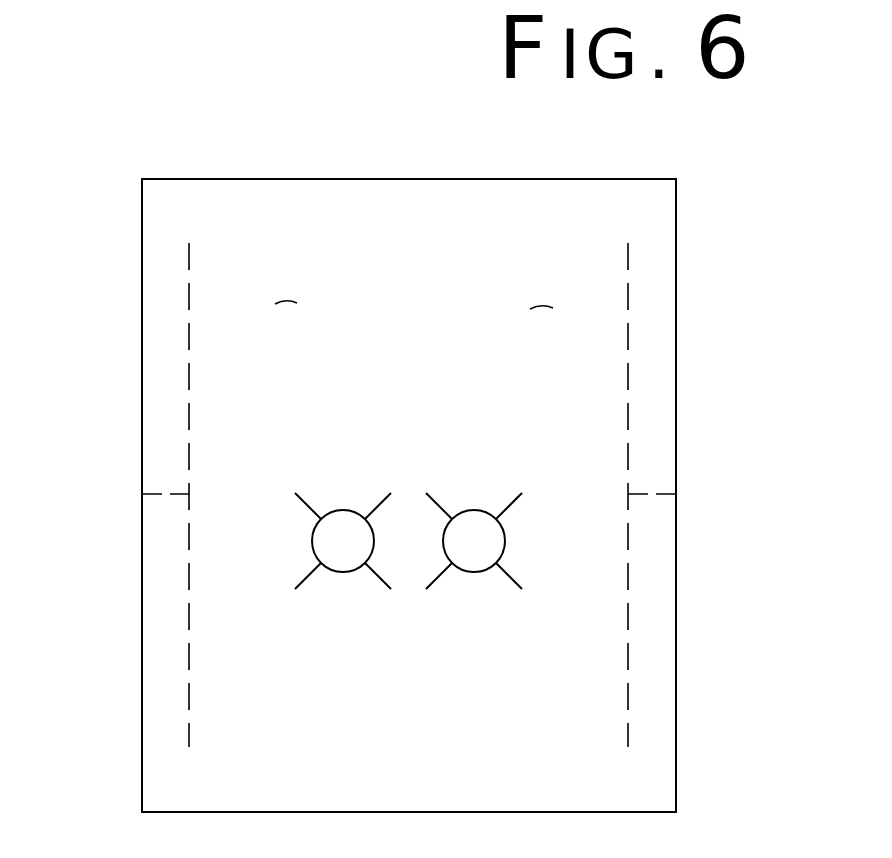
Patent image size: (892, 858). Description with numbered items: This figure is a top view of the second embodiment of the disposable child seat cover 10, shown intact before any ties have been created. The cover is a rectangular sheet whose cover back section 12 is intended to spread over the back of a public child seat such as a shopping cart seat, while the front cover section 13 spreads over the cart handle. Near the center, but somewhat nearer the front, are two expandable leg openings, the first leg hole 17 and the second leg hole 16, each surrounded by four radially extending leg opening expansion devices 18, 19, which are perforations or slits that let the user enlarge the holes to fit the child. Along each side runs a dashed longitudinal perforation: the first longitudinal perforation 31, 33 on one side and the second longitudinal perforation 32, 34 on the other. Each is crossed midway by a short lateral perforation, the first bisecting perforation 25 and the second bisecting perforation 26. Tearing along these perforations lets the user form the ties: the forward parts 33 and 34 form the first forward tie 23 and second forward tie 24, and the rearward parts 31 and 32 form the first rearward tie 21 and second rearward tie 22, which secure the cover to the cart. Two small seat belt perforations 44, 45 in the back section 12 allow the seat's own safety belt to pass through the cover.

The disposable child seat cover 10 is at (317, 127).
The cover back section 12 is at (280, 262).
The front cover section 13 is at (510, 763).
The second leg hole 16 is at (343, 548).
The first leg hole 17 is at (308, 505).
The leg opening expansion device 18 is at (474, 534).
The leg opening expansion device 19 is at (510, 507).
The first rearward tie 21 is at (657, 417).
The second rearward tie 22 is at (170, 437).
The first forward tie 23 is at (650, 640).
The second forward tie 24 is at (163, 612).
The first bisecting perforation 25 is at (655, 495).
The second bisecting perforation 26 is at (157, 494).
The first longitudinal perforation (rearward part) 31 is at (629, 338).
The second longitudinal perforation (rearward part) 32 is at (188, 340).
The first longitudinal perforation (forward part) 33 is at (629, 700).
The second longitudinal perforation (forward part) 34 is at (188, 703).
The seat belt perforation 44 is at (542, 305).
The seat belt perforation 45 is at (290, 298).